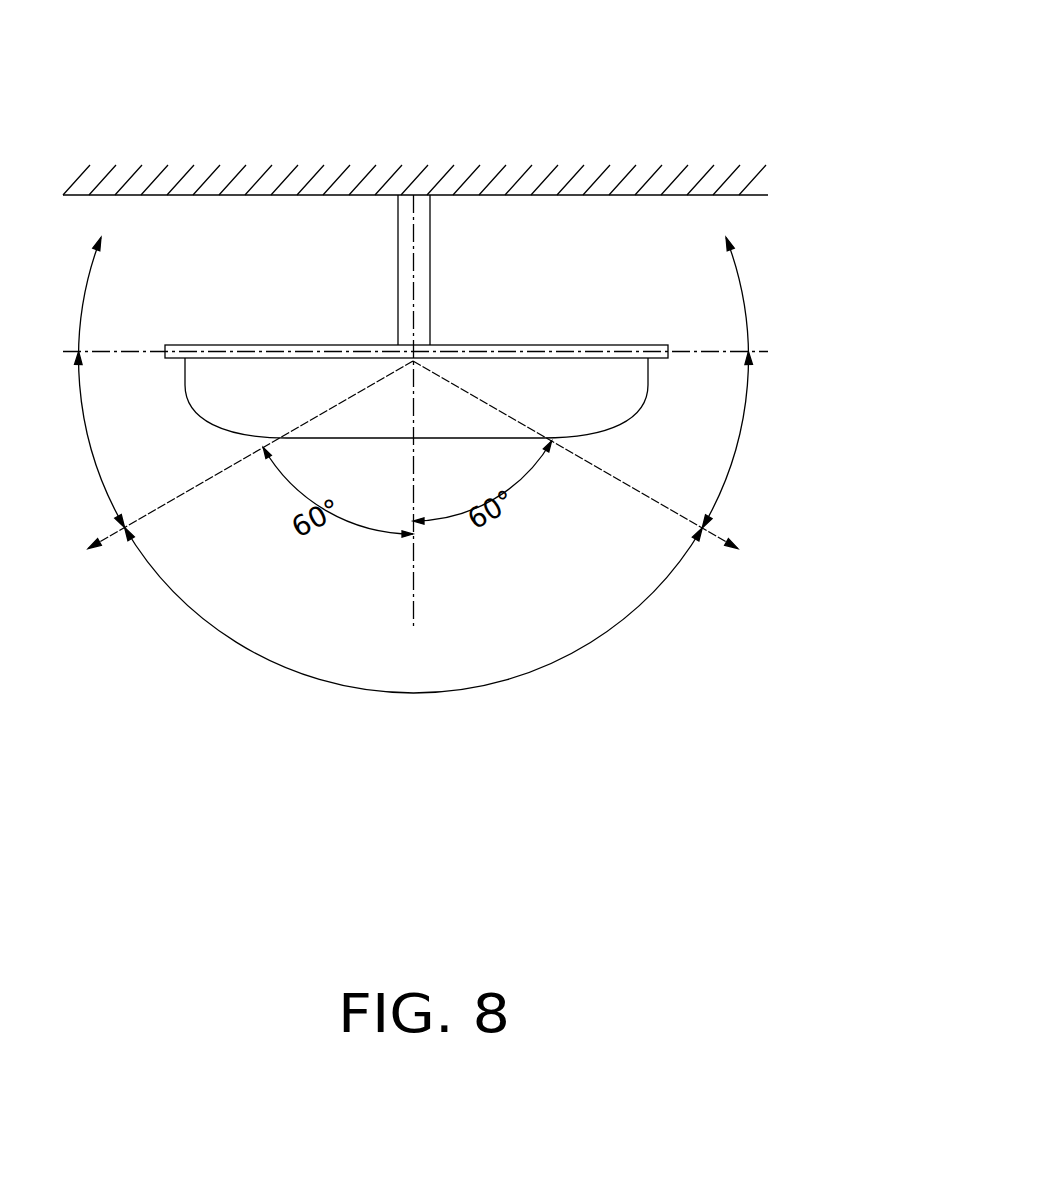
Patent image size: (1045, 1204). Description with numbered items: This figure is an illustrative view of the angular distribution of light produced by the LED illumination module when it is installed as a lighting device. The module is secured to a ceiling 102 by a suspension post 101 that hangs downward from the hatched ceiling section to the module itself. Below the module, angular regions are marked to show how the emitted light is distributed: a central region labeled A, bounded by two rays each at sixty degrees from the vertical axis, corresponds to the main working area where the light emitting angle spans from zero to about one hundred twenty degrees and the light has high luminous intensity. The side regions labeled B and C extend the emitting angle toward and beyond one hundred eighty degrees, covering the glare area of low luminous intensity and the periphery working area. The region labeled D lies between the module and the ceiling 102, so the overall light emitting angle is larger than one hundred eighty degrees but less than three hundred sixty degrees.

The suspension post 101 is at (407, 257).
The ceiling 102 is at (614, 183).
The illumination angle A is at (414, 610).
The left adjustment angle B is at (100, 382).
The right adjustment angle C is at (725, 382).
The distance between lamp and ceiling D is at (510, 412).